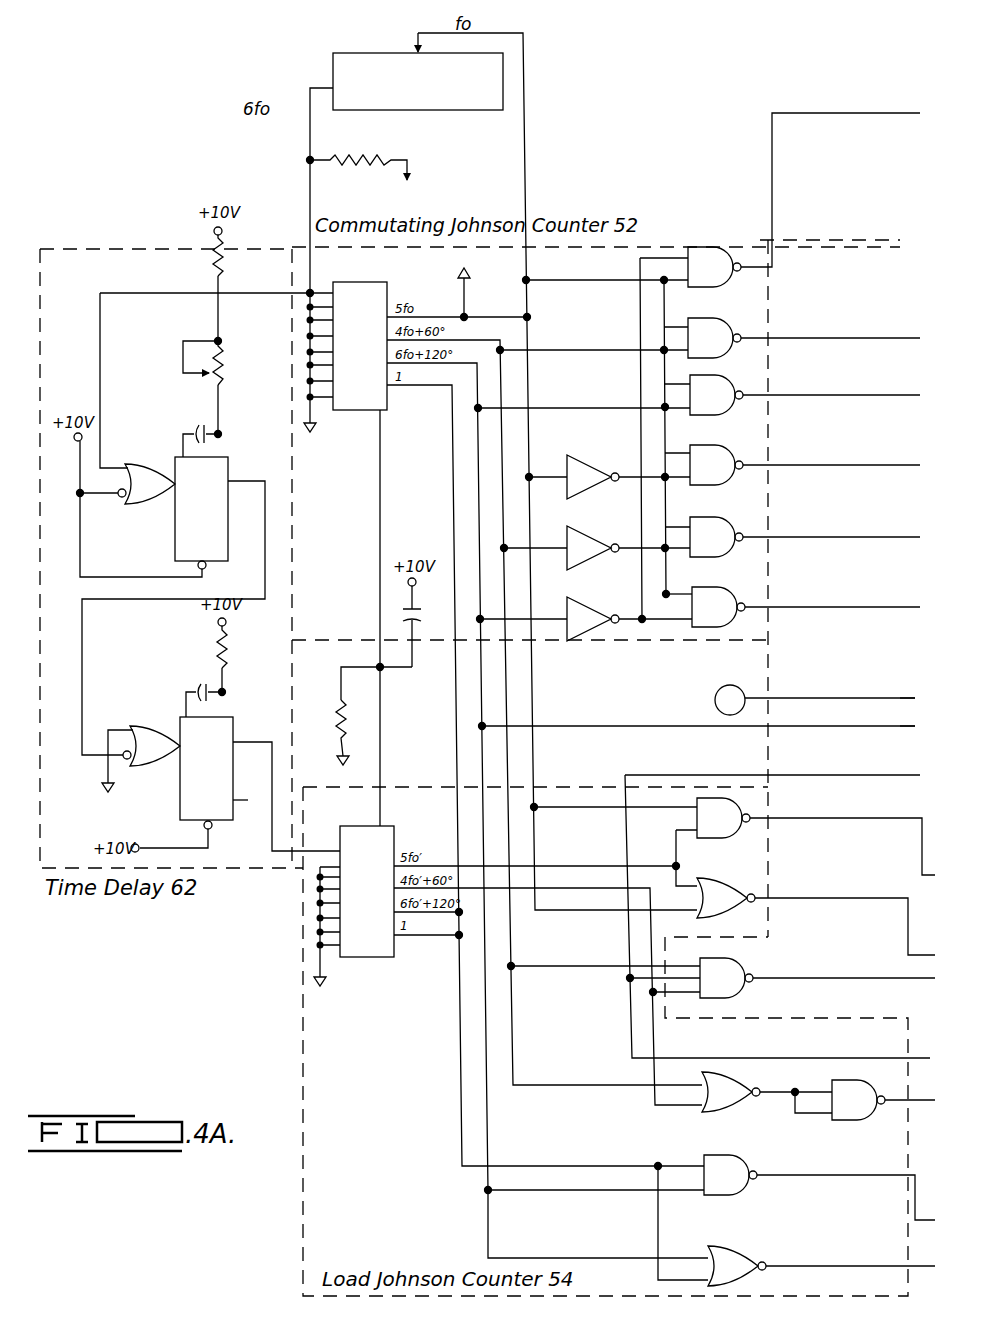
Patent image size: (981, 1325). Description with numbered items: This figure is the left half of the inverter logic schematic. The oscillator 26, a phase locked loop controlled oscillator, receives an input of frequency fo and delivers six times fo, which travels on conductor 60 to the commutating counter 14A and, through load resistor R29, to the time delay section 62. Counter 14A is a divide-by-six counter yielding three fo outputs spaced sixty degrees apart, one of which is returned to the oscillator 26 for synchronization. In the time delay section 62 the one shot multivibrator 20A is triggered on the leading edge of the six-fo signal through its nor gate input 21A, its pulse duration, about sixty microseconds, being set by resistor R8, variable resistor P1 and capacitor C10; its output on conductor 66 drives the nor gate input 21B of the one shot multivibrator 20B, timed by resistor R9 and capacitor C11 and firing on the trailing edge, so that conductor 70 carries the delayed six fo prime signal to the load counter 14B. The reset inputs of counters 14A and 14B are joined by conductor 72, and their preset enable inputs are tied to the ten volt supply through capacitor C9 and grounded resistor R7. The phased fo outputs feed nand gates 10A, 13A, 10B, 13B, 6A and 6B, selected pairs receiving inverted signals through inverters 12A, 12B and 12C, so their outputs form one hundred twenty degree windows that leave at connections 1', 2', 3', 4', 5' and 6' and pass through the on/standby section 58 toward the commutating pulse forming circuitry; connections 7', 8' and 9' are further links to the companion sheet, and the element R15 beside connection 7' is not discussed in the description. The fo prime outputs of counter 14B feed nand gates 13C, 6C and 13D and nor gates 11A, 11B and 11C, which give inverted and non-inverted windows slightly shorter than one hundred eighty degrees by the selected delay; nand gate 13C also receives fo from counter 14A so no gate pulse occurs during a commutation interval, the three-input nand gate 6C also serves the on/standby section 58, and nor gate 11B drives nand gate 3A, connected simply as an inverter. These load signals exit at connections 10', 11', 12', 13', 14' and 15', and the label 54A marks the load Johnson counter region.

The oscillator 26 is at (331, 58).
The conductor 60 is at (306, 160).
The load resistor R29 is at (365, 157).
The ON/Standby section 58 is at (807, 238).
The counter 14A is at (356, 281).
The time delay section 62 is at (248, 888).
The resistor R8 is at (224, 262).
The variable resistor P1 is at (222, 370).
The capacitor C10 is at (196, 426).
The one shot multivibrator 20A is at (201, 513).
The nor gate input 21A is at (127, 484).
The conductor 66 is at (266, 519).
The resistor R9 is at (217, 661).
The capacitor C11 is at (198, 686).
The one shot multivibrator 20B is at (206, 773).
The nor gate input 21B is at (141, 759).
The conductor 70 is at (275, 757).
The conductor 72 is at (454, 487).
The capacitor C9 is at (402, 611).
The resistor R7 is at (338, 715).
The resistor R15 is at (750, 690).
The counter 14B is at (370, 958).
The load Johnson counter section 54A is at (301, 1051).
The Nand gate 10A is at (714, 267).
The Nand gate 13A is at (714, 338).
The Nand gate 10B is at (716, 395).
The Nand gate 13B is at (716, 465).
The Nand gate 6A is at (716, 537).
The Nand gate 6B is at (718, 607).
The inverter 12A is at (628, 477).
The inverter 12B is at (628, 548).
The inverter 12C is at (629, 619).
The Nand gate 13C is at (723, 818).
The Nor gate 11A is at (726, 898).
The three input Nand gate 6C is at (726, 978).
The Nor gate 11B is at (731, 1092).
The Nand gate 3A is at (858, 1100).
The Nand gate 13D is at (730, 1175).
The Nor gate 11C is at (737, 1266).
The connection 1' is at (830, 179).
The connection 2' is at (830, 325).
The connection 3' is at (831, 383).
The connection 4' is at (831, 452).
The connection 5' is at (831, 524).
The connection 6' is at (832, 594).
The connection 7' is at (908, 686).
The connection 8' is at (908, 713).
The connection 9' is at (777, 905).
The connection 10' is at (843, 855).
The connection 11' is at (846, 926).
The connection 12' is at (844, 988).
The connection 13' is at (911, 1086).
The connection 14' is at (849, 1197).
The connection 15' is at (851, 1254).